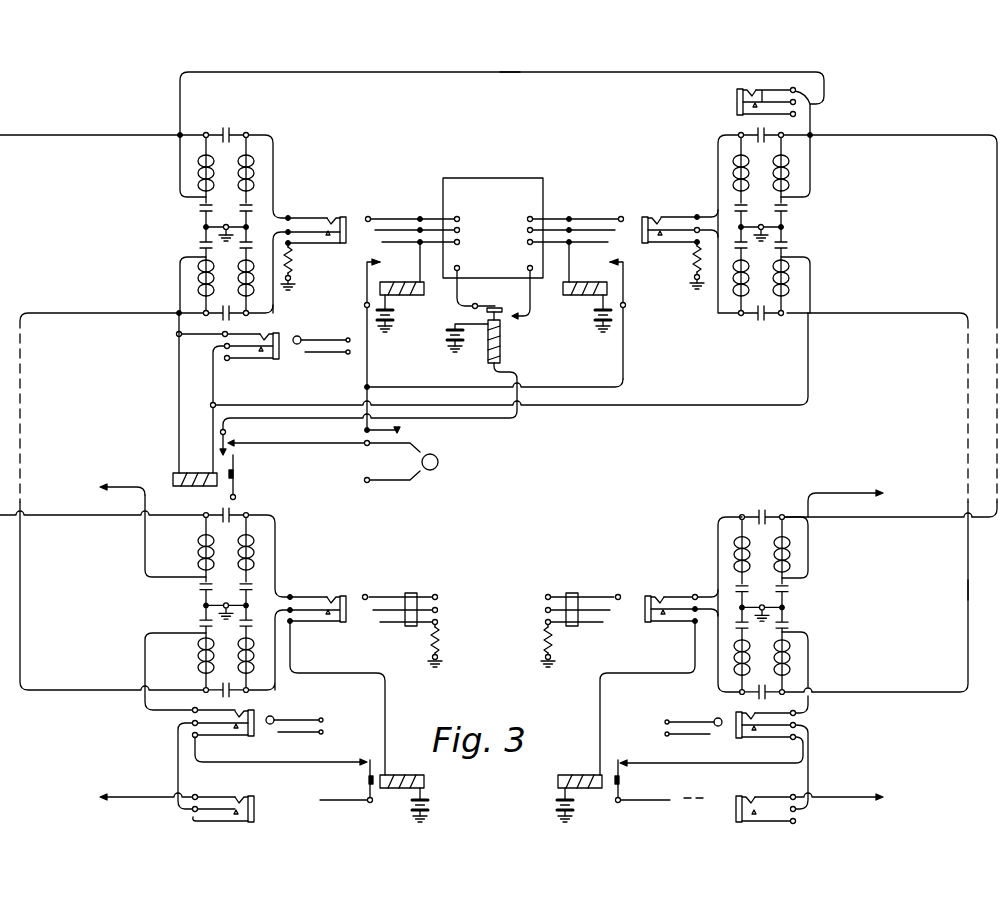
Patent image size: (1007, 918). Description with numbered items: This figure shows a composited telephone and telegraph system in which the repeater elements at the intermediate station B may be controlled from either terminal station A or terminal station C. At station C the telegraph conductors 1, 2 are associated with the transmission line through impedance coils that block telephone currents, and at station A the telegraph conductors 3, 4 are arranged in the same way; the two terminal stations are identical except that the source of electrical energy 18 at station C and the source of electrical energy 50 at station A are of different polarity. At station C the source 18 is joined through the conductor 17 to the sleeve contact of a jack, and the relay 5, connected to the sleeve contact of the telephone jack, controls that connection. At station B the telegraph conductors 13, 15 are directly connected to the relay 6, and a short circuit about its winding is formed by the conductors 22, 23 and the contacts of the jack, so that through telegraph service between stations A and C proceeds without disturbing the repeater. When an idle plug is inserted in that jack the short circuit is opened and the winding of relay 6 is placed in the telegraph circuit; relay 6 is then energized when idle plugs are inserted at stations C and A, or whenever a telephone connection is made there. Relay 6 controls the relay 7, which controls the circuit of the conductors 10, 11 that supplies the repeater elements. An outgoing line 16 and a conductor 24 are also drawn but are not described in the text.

The telegraph conductor 1 is at (868, 494).
The telegraph conductor 2 is at (806, 676).
The telegraph conductor 3 is at (130, 487).
The telegraph conductor 4 is at (139, 796).
The relay 5 is at (580, 776).
The relay 6 is at (184, 482).
The relay 7 is at (496, 349).
The conductor 10 is at (476, 290).
The conductor 11 is at (516, 295).
The telegraph conductor 13 is at (808, 352).
The telegraph conductor 15 is at (180, 298).
The outgoing line 16 is at (838, 796).
The conductor 17 is at (735, 764).
The source of electrical energy 18 is at (660, 815).
The conductor 22 is at (180, 337).
The conductor 23 is at (210, 385).
The conductor 24 is at (210, 435).
The source of electrical energy 50 is at (311, 785).